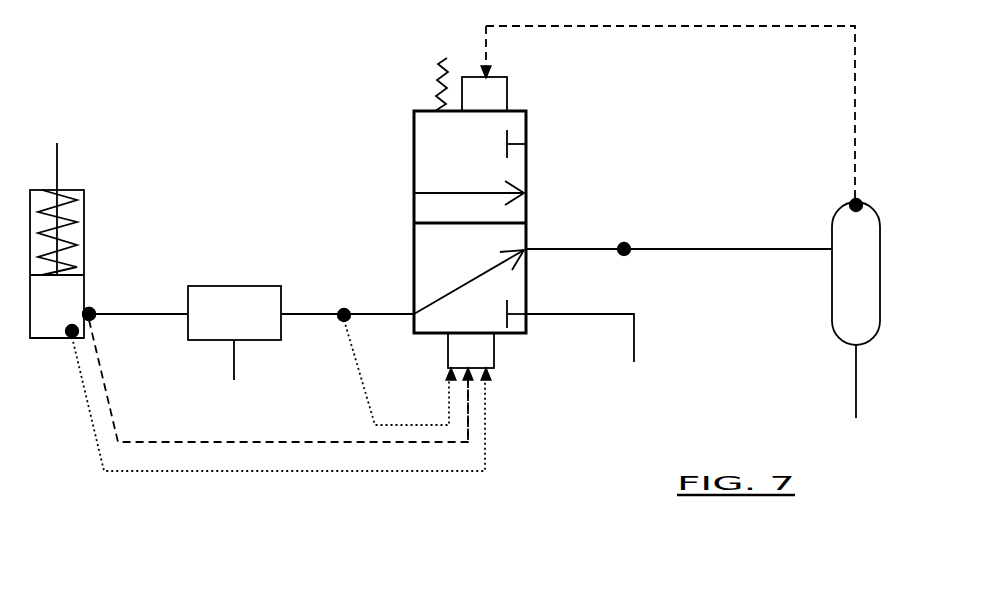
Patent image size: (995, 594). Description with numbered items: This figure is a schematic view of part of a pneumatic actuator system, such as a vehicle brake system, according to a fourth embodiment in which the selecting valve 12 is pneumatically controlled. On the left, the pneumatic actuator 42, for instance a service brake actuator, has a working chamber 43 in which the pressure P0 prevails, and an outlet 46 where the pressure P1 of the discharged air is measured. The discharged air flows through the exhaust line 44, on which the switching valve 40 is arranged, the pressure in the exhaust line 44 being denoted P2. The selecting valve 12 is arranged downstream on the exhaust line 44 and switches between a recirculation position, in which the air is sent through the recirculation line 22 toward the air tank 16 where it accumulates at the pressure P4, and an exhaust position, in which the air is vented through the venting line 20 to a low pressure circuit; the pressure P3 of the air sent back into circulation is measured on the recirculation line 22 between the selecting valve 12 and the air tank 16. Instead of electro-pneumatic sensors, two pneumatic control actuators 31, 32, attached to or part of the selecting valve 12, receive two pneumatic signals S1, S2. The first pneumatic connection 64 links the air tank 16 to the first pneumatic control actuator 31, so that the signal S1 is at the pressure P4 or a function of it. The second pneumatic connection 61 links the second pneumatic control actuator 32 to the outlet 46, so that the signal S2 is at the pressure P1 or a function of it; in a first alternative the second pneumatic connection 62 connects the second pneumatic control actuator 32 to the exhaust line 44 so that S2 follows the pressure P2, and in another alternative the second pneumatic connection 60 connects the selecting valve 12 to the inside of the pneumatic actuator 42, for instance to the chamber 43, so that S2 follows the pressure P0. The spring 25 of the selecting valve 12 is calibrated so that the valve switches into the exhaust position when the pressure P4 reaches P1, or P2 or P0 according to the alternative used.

The selecting valve 12 is at (345, 162).
The air tank 16 is at (856, 273).
The venting line 20 is at (589, 355).
The recirculation line 22 is at (857, 392).
The spring 25 is at (432, 86).
The first pneumatic control actuator 31 is at (485, 100).
The second pneumatic control actuator 32 is at (485, 358).
The switching valve 40 is at (234, 333).
The pneumatic actuator 42 is at (100, 184).
The working chamber 43 is at (36, 339).
The exhaust line 44 is at (145, 313).
The outlet 46 is at (90, 308).
The second pneumatic connection 60 is at (255, 471).
The second pneumatic connection 61 is at (286, 442).
The second pneumatic connection 62 is at (368, 408).
The first pneumatic connection 64 is at (853, 112).
The pressure in the pneumatic actuator P0 is at (65, 320).
The pressure of the air discharged from the pneumatic actuator P1 is at (104, 324).
The pressure of air in the exhaust line P2 is at (350, 303).
The pressure of the air sent back into circulation P3 is at (640, 240).
The pressure in the air tank P4 is at (866, 196).
The pneumatic signal S1 is at (499, 52).
The pneumatic signal S2 is at (489, 411).